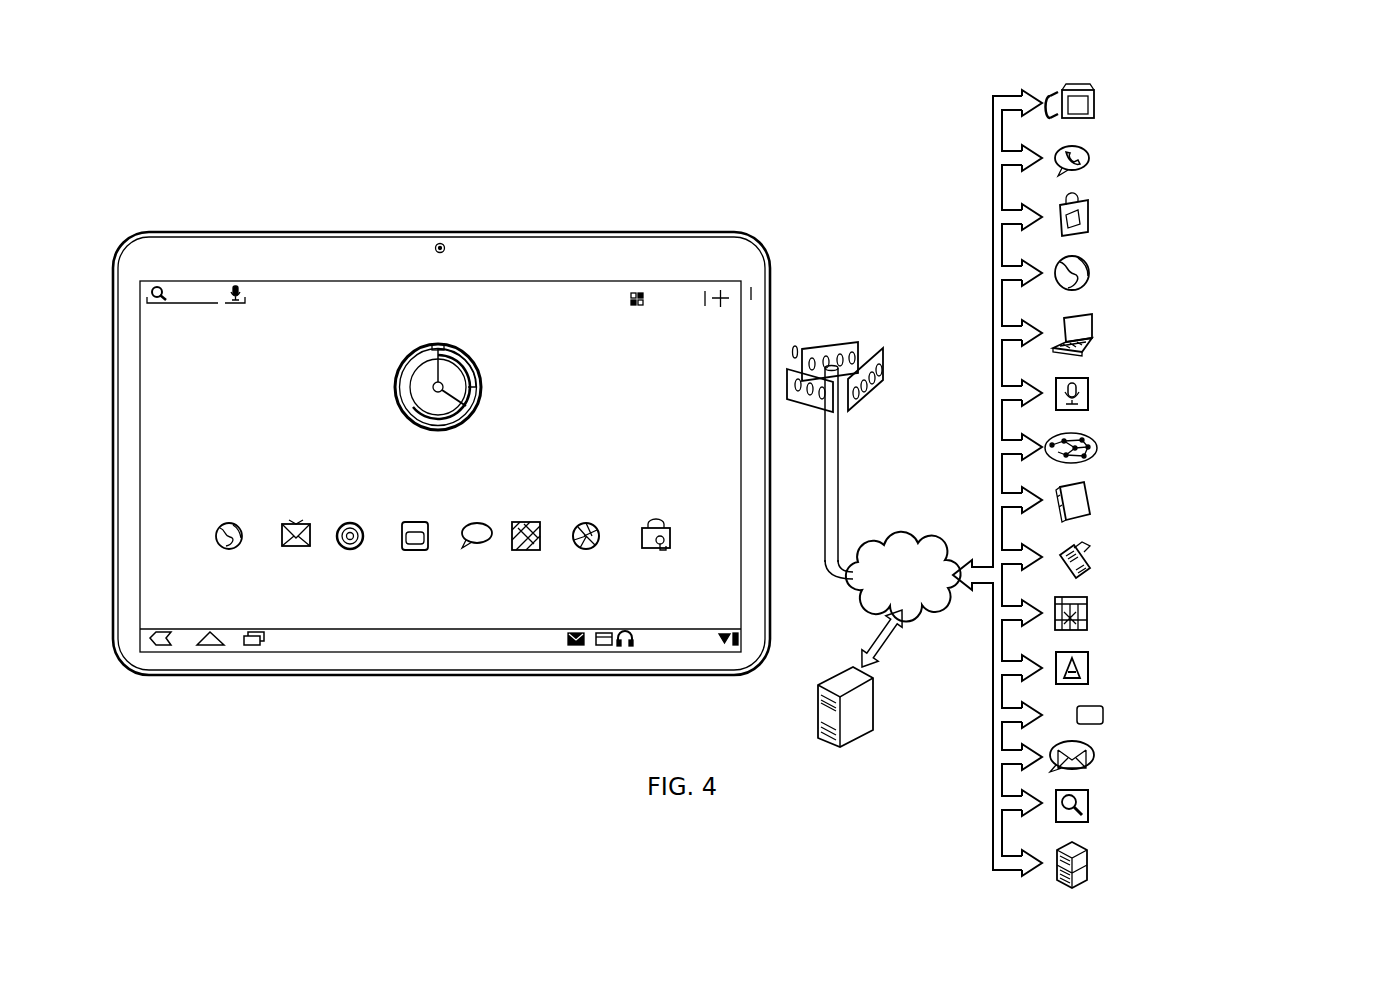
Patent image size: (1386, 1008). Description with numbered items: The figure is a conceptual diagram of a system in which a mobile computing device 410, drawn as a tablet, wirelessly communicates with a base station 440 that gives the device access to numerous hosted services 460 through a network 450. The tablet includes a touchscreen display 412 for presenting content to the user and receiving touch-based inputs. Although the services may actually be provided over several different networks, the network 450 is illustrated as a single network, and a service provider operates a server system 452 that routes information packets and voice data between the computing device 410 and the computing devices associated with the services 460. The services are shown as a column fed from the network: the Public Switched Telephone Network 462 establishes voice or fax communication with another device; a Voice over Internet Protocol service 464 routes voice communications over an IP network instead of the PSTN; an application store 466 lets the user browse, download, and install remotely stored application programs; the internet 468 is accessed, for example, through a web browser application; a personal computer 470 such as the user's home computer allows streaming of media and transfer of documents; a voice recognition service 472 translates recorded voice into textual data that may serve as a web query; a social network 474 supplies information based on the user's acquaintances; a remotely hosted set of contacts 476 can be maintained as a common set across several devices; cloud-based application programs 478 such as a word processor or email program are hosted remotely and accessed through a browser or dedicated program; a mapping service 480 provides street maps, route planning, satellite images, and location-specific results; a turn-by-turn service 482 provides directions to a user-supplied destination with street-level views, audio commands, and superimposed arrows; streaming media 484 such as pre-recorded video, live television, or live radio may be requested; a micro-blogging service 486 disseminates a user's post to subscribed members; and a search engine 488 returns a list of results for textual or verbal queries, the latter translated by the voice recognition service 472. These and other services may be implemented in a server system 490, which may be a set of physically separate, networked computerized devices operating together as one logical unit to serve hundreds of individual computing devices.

The mobile computing device 410 is at (482, 224).
The touchscreen display 412 is at (318, 331).
The base station 440 is at (880, 318).
The network 450 is at (905, 538).
The server system 452 is at (874, 702).
The hosted services 460 is at (1180, 60).
The Public Switched Telephone Network (PSTN) 462 is at (1100, 92).
The Voice over Internet Protocol (VoIP) service 464 is at (1082, 150).
The application store 466 is at (1078, 203).
The internet 468 is at (1082, 262).
The personal computer 470 is at (1082, 320).
The voice recognition service 472 is at (1082, 382).
The social network 474 is at (1082, 439).
The contacts 476 is at (1082, 487).
The cloud-based application programs 478 is at (1078, 551).
The mapping service 480 is at (1082, 604).
The turn-by-turn service 482 is at (1082, 658).
The streaming media 484 is at (1082, 707).
The micro-blogging service 486 is at (1082, 755).
The search engine 488 is at (1082, 802).
The server system 490 is at (1082, 852).